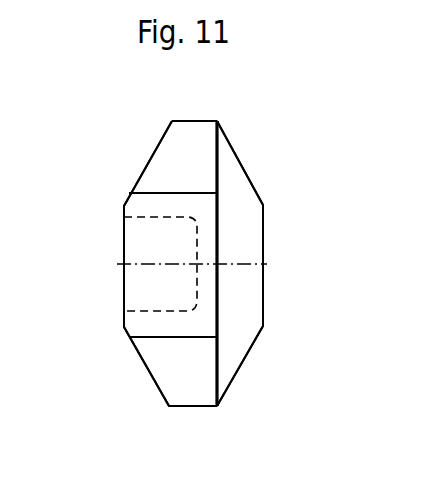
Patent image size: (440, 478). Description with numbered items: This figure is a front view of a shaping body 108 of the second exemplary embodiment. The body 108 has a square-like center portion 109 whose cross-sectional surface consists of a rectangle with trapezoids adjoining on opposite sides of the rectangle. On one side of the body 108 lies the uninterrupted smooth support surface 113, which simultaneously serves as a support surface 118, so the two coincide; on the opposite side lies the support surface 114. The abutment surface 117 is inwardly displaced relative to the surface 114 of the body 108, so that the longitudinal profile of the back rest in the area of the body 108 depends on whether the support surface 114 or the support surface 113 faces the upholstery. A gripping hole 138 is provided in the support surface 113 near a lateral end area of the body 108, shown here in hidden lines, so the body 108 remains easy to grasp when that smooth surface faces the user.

The body 108 is at (188, 365).
The center portion 109 is at (140, 320).
The support surface 113 is at (122, 263).
The support surface 114 is at (264, 243).
The abutment surface 117 is at (219, 156).
The support surface 118 is at (124, 210).
The gripping hole 138 is at (143, 218).